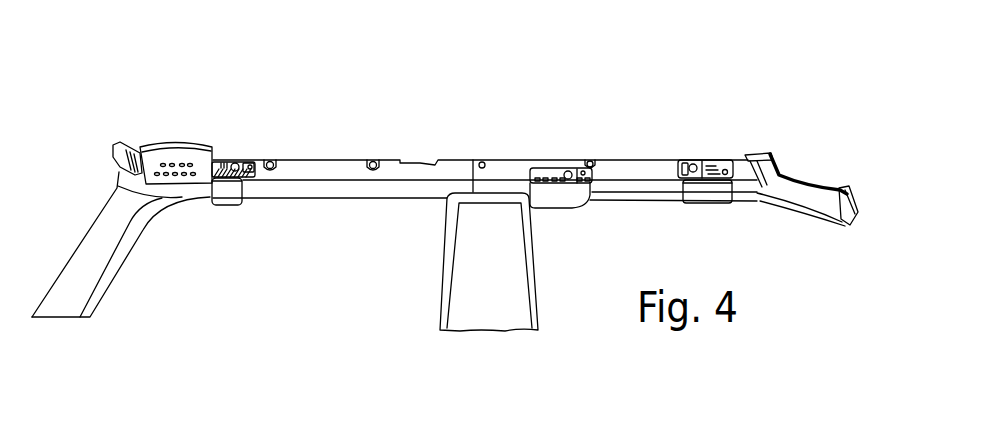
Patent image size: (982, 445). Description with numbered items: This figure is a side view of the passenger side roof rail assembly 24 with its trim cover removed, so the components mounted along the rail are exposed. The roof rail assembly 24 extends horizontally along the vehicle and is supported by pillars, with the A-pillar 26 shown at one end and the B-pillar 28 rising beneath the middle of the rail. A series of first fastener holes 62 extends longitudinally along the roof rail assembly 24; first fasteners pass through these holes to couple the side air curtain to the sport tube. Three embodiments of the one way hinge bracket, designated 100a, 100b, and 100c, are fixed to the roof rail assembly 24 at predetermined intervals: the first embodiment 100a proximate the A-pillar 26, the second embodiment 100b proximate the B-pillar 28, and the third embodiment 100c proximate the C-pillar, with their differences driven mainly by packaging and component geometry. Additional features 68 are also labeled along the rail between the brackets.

The passenger side roof rail assembly 24 is at (770, 167).
The A-pillar 26 is at (77, 298).
The B-pillar 28 is at (475, 315).
The first fastener holes 62 is at (236, 161).
The attachment lug 68 is at (271, 161).
The one way hinge bracket, first embodiment 100a is at (227, 192).
The one way hinge bracket, second embodiment 100b is at (557, 197).
The one way hinge bracket, third embodiment 100c is at (705, 190).